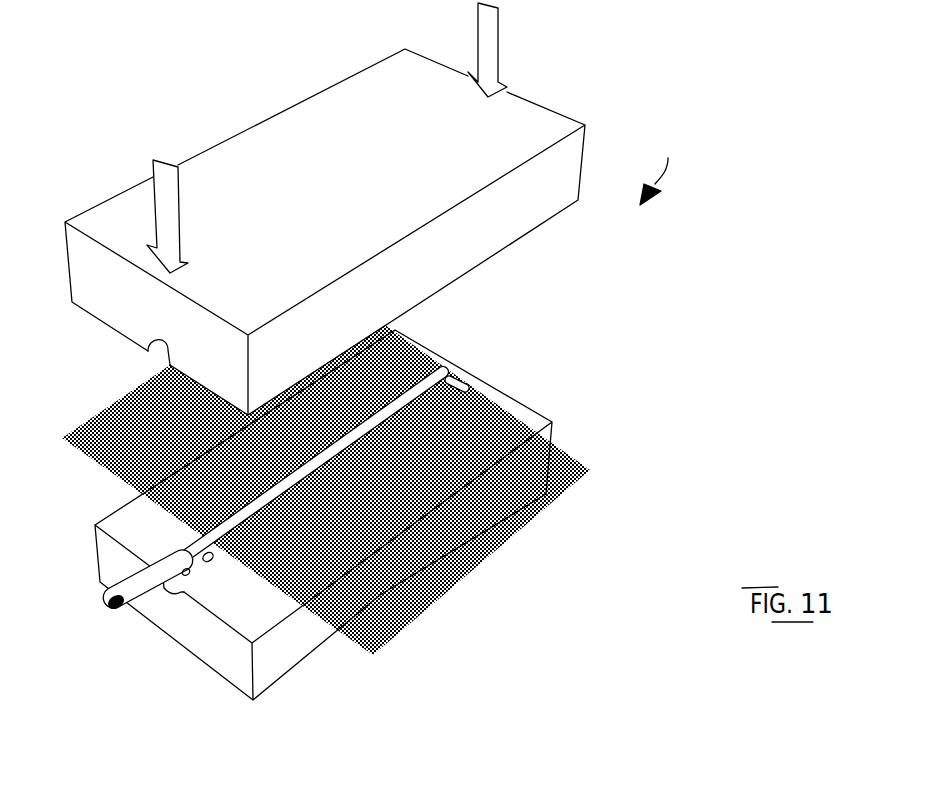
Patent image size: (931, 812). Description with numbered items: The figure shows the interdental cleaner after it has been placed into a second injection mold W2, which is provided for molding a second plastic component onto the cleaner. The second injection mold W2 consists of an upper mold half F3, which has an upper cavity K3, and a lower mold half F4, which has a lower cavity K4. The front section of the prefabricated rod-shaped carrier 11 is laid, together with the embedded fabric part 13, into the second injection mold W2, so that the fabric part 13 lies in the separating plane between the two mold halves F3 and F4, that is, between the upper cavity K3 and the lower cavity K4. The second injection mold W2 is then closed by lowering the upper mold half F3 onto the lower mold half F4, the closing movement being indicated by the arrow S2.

The upper mold half F3 is at (287, 47).
The lower mold half F4 is at (293, 660).
The arrow S2 is at (340, 138).
The second injection mold W2 is at (667, 161).
The upper cavity K3 is at (150, 352).
The lower cavity K4 is at (202, 568).
The fabric part 13 is at (527, 520).
The rod-shaped carrier 11 is at (140, 578).